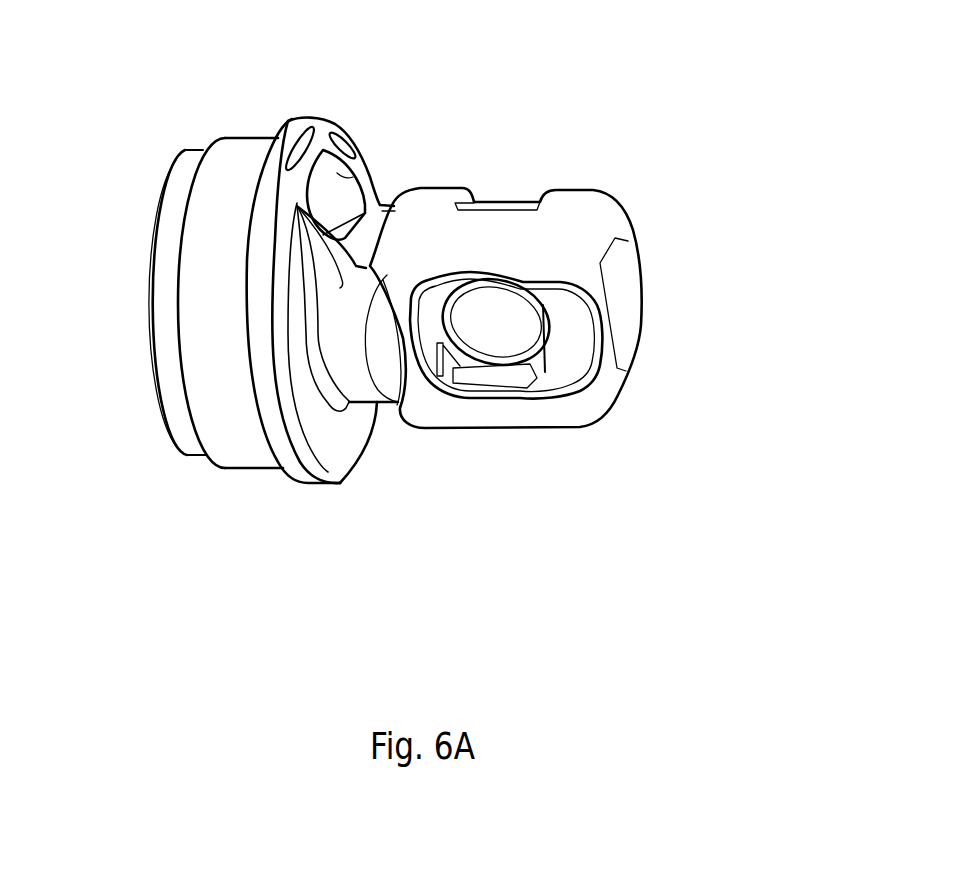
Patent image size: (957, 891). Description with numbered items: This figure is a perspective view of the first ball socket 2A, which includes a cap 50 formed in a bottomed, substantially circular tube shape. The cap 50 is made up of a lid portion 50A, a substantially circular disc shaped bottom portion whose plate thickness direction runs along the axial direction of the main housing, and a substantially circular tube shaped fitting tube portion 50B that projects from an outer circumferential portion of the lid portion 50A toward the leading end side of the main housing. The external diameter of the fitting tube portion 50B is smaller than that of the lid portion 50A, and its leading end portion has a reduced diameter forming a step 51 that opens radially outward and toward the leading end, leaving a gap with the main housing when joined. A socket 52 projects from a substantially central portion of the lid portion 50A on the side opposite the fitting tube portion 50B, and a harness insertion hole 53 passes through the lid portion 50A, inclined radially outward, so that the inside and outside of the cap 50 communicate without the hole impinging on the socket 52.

The first ball socket 2A is at (578, 158).
The cap 50 is at (497, 458).
The lid portion 50A is at (343, 440).
The fitting tube portion 50B is at (253, 457).
The step 51 is at (199, 460).
The socket 52 is at (587, 233).
The harness insertion hole 53 is at (345, 127).